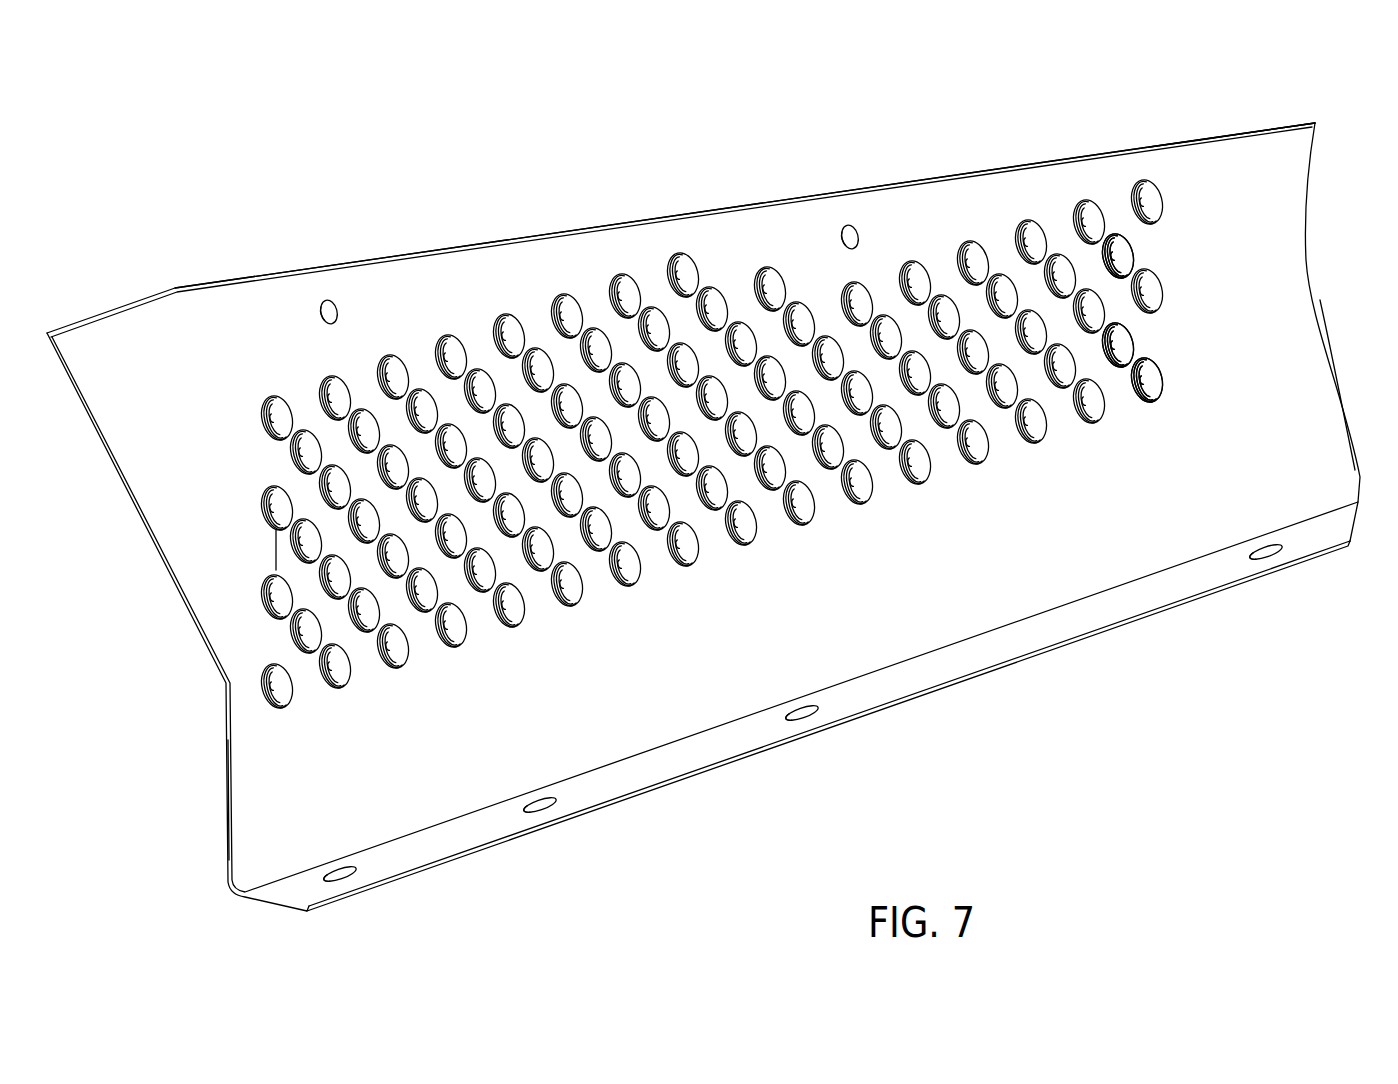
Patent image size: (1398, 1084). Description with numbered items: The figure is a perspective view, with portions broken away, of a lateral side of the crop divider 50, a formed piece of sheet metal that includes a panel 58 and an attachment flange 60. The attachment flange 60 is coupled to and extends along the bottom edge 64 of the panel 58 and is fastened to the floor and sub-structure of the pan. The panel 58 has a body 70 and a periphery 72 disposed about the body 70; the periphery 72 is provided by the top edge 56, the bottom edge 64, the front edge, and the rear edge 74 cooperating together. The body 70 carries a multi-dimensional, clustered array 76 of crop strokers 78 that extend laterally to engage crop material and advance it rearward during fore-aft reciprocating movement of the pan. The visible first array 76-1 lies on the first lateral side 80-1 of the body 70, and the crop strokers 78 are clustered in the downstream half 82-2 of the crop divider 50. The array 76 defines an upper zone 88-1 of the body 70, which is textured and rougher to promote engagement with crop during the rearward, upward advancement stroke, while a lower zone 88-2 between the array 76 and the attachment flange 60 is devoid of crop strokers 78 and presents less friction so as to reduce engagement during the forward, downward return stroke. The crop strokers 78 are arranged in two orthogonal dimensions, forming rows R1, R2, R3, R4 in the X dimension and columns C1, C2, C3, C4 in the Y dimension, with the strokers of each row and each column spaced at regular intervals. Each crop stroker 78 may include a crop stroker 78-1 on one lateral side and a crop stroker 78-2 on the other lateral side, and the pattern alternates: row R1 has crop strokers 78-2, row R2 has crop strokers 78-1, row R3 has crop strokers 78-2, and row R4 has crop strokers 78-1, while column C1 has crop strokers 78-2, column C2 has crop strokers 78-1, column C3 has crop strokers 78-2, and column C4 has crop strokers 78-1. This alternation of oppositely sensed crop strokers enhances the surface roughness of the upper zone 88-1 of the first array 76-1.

The crop divider 50 is at (320, 148).
The top edge 56 is at (935, 177).
The panel 58 is at (1288, 236).
The attachment flange 60 is at (1300, 538).
The bottom edge 64 is at (1288, 530).
The body 70 is at (1293, 306).
The periphery 72 is at (1278, 117).
The rear edge 74 is at (148, 542).
The array 76 is at (730, 262).
The first array 76-1 is at (800, 282).
The crop strokers 78 is at (1117, 367).
The crop stroker 78-1 is at (1004, 410).
The crop stroker 78-2 is at (1088, 425).
The first lateral side 80-1 is at (1207, 158).
The downstream half 82-2 is at (830, 208).
The upper zone 88-1 is at (275, 552).
The lower zone 88-2 is at (292, 740).
The column C1 is at (1150, 175).
The column C2 is at (1118, 225).
The column C3 is at (1092, 193).
The column C4 is at (1061, 247).
The row R1 is at (1173, 377).
The row R2 is at (1147, 338).
The row R3 is at (1170, 287).
The row R4 is at (1143, 252).